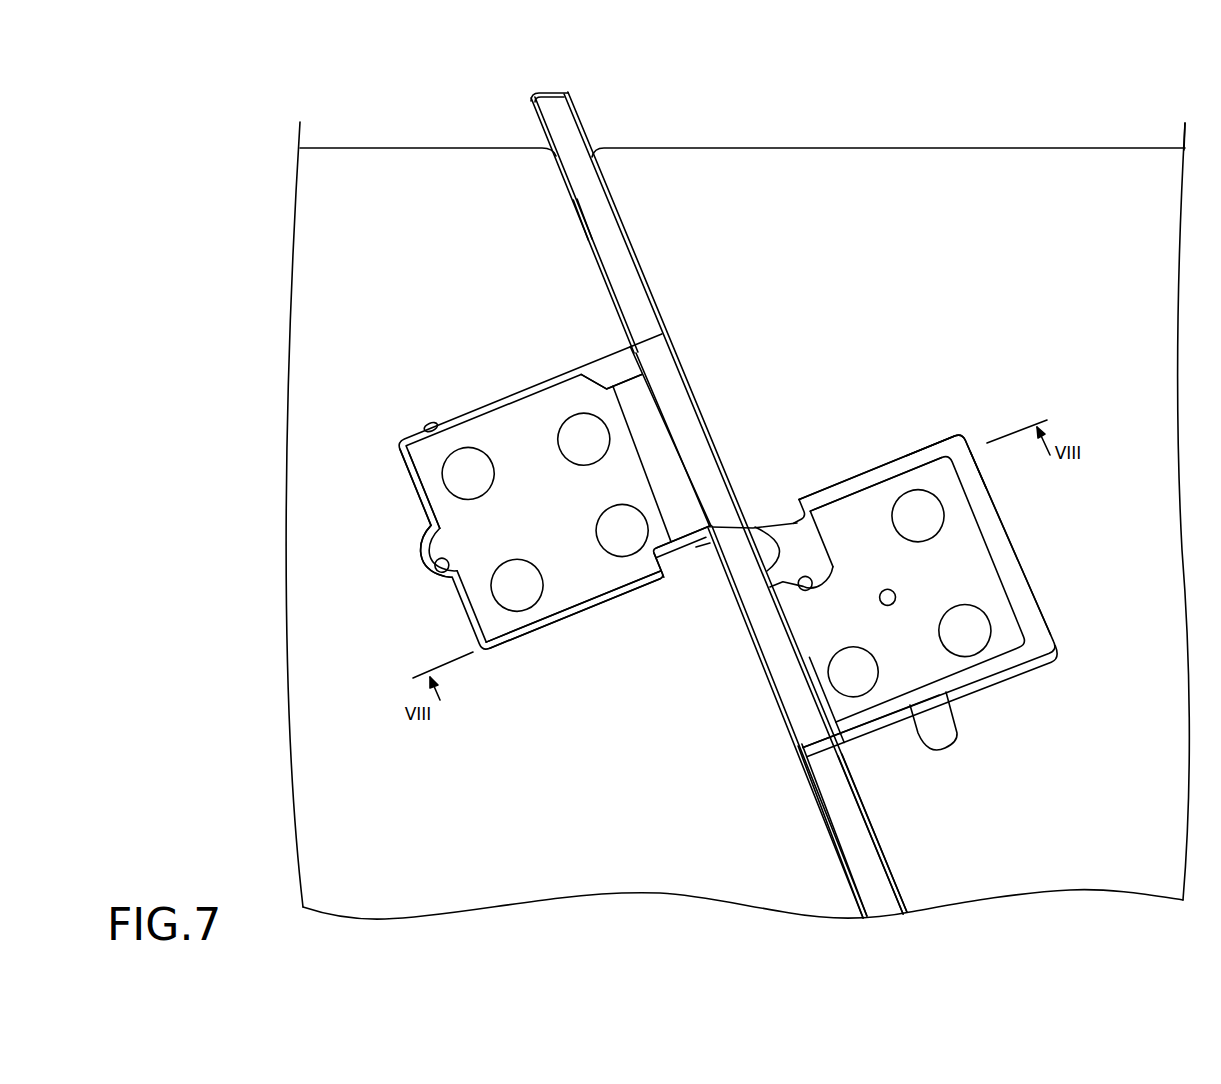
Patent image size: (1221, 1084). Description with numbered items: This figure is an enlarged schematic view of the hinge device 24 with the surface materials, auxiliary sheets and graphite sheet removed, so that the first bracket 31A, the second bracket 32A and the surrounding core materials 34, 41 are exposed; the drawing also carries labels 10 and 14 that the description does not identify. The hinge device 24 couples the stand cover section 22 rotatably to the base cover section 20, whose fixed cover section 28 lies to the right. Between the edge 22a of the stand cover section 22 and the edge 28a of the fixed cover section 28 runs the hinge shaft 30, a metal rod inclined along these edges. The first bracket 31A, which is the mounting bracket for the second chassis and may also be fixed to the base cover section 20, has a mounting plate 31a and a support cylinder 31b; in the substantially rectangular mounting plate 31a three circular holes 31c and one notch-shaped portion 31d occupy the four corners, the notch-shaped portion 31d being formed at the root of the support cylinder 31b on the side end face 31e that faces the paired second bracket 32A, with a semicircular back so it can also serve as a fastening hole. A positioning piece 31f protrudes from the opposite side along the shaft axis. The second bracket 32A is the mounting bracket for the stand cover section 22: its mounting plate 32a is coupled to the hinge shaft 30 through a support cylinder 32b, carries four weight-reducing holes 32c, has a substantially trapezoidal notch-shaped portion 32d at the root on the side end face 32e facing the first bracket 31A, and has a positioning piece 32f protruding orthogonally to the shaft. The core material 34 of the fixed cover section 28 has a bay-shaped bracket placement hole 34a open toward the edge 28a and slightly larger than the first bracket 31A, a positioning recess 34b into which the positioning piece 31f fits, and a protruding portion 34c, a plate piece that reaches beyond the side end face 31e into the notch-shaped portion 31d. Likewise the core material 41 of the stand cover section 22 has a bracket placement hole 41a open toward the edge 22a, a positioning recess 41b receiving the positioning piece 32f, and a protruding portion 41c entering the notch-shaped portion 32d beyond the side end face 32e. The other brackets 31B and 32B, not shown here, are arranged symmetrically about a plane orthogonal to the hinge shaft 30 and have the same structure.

The vehicle body structure 10 is at (137, 101).
The side panel 14 is at (1133, 108).
The base cover section 20 is at (1159, 473).
The stand cover section 22 is at (377, 141).
The edge of the stand cover section 22a is at (860, 885).
The hinge device 24 is at (593, 109).
The fixed cover section 28 is at (929, 133).
The edge of the fixed cover section 28a is at (870, 832).
The hinge shaft 30 is at (605, 231).
The first bracket 31A is at (980, 577).
The first bracket 31B is at (1058, 542).
The mounting plate 31a is at (957, 547).
The support cylinder 31b is at (792, 677).
The hole 31c is at (916, 497).
The notch-shaped portion 31d is at (763, 652).
The side end face 31e is at (863, 482).
The positioning piece 31f is at (955, 735).
The second bracket 32A is at (442, 515).
The second bracket 32B is at (463, 497).
The mounting plate 32a is at (437, 460).
The support cylinder 32b is at (668, 360).
The hole 32c is at (573, 432).
The notch-shaped portion 32d is at (603, 385).
The side end face 32e is at (518, 637).
The positioning piece 32f is at (422, 556).
The core material 34 is at (1055, 872).
The bracket placement hole 34a is at (962, 430).
The positioning recess 34b is at (933, 752).
The protruding portion 34c is at (778, 556).
The core material 41 is at (638, 880).
The bracket placement hole 41a is at (428, 420).
The positioning recess 41b is at (434, 571).
The protruding portion 41c is at (705, 557).